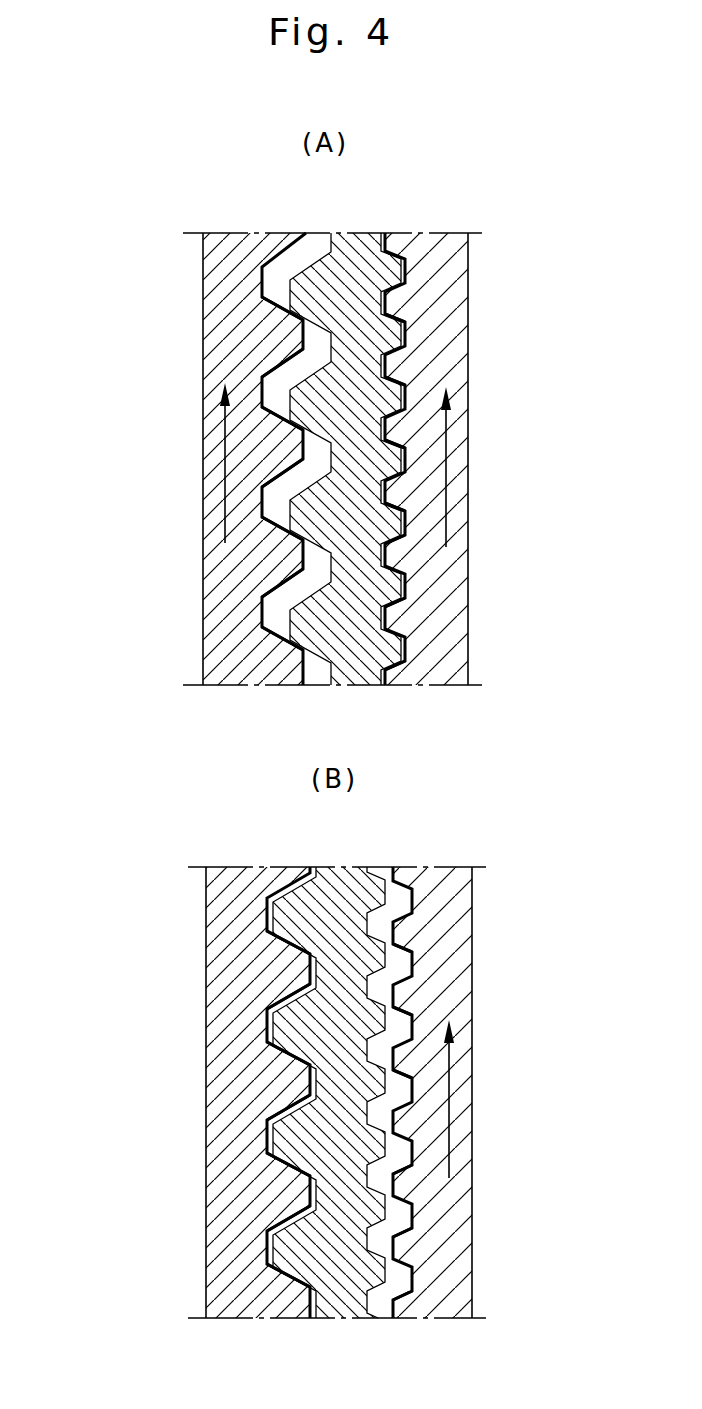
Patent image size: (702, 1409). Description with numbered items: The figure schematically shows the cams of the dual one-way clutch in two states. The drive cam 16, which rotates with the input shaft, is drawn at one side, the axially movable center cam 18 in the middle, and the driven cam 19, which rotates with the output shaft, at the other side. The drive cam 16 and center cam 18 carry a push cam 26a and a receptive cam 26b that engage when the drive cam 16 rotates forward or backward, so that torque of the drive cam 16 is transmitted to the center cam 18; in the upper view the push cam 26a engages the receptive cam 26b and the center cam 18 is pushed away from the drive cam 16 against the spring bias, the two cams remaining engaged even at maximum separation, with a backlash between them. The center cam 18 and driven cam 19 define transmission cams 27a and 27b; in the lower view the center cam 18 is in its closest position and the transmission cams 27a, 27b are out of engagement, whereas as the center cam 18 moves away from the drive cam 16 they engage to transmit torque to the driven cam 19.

The drive cam 16 is at (203, 303).
The center cam 18 is at (397, 298).
The driven cam 19 is at (463, 637).
The push cam 26a is at (293, 447).
The receptive cam 26b is at (293, 607).
The transmission cam 27a is at (397, 587).
The transmission cam 27b is at (397, 430).